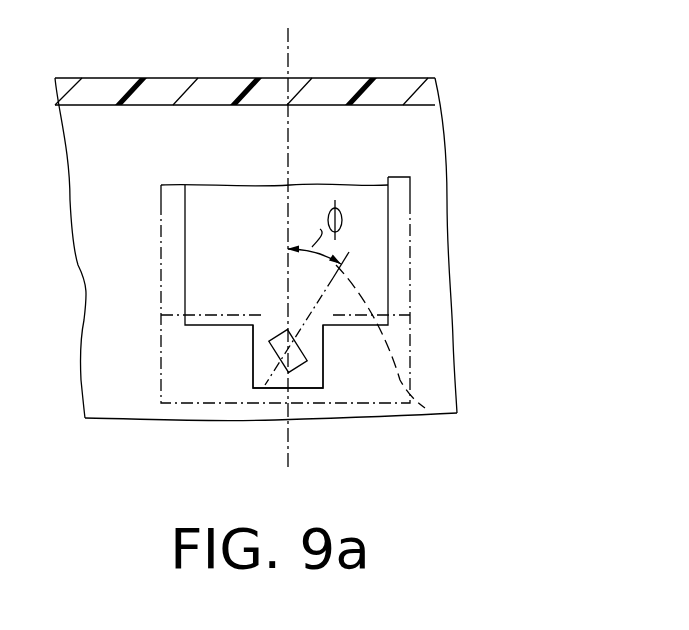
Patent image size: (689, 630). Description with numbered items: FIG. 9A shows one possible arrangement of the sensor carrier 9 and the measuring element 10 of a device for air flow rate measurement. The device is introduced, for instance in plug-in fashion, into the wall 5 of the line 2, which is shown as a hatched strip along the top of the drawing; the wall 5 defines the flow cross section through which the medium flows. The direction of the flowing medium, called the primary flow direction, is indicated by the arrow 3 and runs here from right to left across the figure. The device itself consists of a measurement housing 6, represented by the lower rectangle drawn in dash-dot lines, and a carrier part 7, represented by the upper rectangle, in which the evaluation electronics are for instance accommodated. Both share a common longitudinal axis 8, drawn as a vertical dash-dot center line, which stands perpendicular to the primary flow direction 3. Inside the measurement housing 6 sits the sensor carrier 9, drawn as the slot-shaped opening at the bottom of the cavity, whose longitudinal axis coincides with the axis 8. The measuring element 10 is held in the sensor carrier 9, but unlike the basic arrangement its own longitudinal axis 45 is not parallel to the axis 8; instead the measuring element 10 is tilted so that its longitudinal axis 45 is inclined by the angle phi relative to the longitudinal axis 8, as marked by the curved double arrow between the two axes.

The line 2 is at (127, 133).
The primary flow direction arrow 3 is at (472, 348).
The wall 5 is at (437, 80).
The measurement housing 6 is at (410, 273).
The carrier part 7 is at (410, 203).
The longitudinal axis 8 is at (290, 35).
The sensor carrier 9 is at (315, 380).
The measuring element 10 is at (282, 365).
The longitudinal axis of the measuring element 45 is at (425, 408).